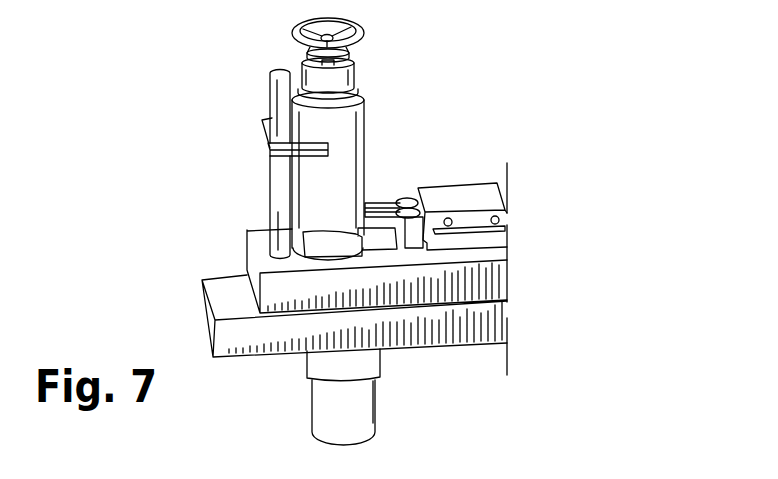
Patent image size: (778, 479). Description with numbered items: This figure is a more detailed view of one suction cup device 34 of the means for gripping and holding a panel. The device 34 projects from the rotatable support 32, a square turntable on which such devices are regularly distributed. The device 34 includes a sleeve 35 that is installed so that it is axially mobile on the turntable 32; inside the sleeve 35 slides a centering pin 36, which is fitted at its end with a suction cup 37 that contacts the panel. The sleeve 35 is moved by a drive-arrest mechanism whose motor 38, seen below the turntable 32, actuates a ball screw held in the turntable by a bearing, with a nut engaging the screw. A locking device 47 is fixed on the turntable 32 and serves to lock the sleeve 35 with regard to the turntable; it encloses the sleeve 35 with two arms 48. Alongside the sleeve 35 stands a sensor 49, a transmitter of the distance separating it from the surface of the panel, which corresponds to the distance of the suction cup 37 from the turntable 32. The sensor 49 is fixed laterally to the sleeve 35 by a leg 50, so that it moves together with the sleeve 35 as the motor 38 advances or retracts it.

The rotatable support 32 is at (203, 306).
The suction cup device 34 is at (345, 130).
The sleeve 35 is at (349, 127).
The centering pin 36 is at (352, 78).
The suction cup 37 is at (309, 37).
The motor 38 is at (338, 410).
The locking device 47 is at (457, 190).
The arms 48 is at (350, 226).
The distance transmitter 49 is at (277, 97).
The leg 50 is at (266, 143).